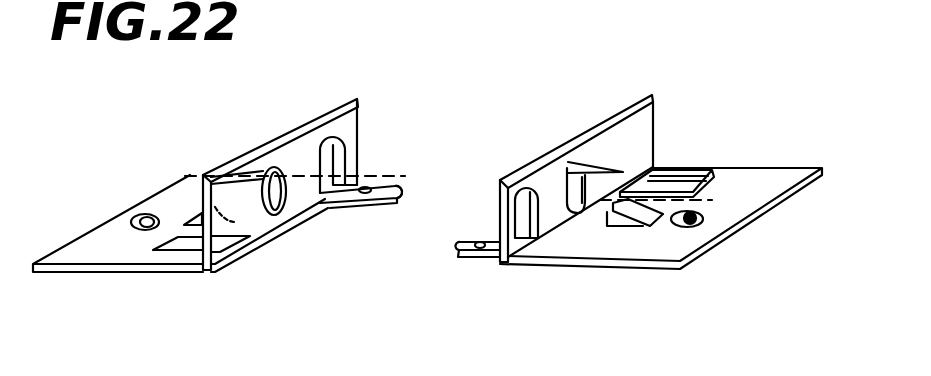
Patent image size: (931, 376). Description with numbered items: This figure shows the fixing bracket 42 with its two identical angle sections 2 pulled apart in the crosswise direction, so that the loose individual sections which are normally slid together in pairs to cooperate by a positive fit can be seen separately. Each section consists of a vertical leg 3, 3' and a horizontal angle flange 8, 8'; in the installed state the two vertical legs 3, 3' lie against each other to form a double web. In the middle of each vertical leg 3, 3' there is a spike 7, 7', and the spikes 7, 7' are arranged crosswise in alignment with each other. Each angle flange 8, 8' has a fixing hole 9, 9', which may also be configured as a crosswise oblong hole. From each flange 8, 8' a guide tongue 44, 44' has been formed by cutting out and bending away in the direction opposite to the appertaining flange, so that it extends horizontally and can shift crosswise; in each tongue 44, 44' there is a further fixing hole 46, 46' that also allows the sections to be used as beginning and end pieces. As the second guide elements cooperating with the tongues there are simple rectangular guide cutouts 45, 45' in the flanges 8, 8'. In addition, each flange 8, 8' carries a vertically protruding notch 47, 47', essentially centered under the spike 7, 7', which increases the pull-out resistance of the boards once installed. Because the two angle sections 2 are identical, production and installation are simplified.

The angle section 2 is at (141, 156).
The vertical leg 3 is at (295, 156).
The spike 7 is at (248, 143).
The angle flange 8 is at (180, 249).
The fixing hole 9 is at (121, 194).
The fixing bracket 42 is at (496, 106).
The guide tongue 44 is at (438, 165).
The guide cutout 45 is at (205, 282).
The fixing hole 46 is at (370, 160).
The notch 47 is at (200, 170).
The vertical leg 3' is at (607, 152).
The spike 7' is at (595, 146).
The angle flange 8' is at (661, 245).
The fixing hole 9' is at (719, 243).
The guide tongue 44' is at (472, 289).
The guide cutout 45' is at (707, 148).
The fixing hole 46' is at (462, 211).
The notch 47' is at (620, 268).